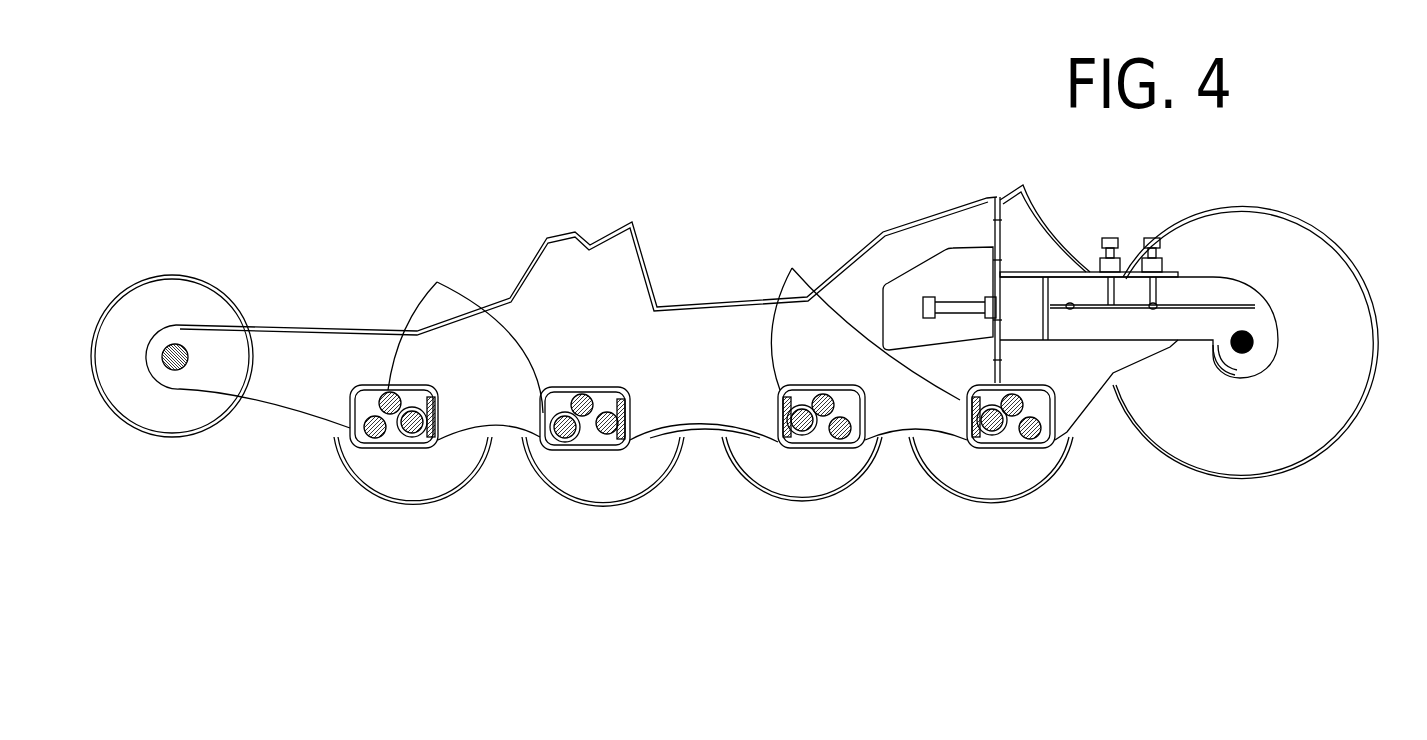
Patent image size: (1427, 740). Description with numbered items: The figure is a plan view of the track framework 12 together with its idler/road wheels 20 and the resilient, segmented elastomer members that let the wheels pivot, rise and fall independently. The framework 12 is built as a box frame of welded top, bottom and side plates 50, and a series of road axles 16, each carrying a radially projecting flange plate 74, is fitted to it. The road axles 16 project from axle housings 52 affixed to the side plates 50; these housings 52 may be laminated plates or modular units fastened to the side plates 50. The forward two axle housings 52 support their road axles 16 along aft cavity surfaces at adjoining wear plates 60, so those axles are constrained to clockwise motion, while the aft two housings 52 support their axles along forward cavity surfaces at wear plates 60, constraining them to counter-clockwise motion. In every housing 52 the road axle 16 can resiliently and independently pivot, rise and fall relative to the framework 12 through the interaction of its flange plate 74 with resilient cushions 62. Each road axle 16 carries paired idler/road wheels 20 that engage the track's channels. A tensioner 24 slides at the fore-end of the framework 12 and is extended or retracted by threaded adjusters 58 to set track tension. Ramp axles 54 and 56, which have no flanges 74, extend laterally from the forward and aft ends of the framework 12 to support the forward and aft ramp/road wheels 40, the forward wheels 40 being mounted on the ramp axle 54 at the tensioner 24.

The track framework 12 is at (305, 308).
The road axle 16 is at (403, 448).
The idler/road wheel 20 is at (607, 507).
The tensioner 24 is at (1215, 335).
The ramp/road wheel 40 is at (157, 438).
The side plate 50 is at (707, 420).
The axle housing 52 is at (674, 319).
The ramp axle 54 is at (170, 344).
The ramp axle 56 is at (1255, 338).
The threaded adjuster 58 is at (952, 307).
The wear plate 60 is at (438, 433).
The resilient cushion 62 is at (402, 385).
The flange plate 74 is at (373, 432).